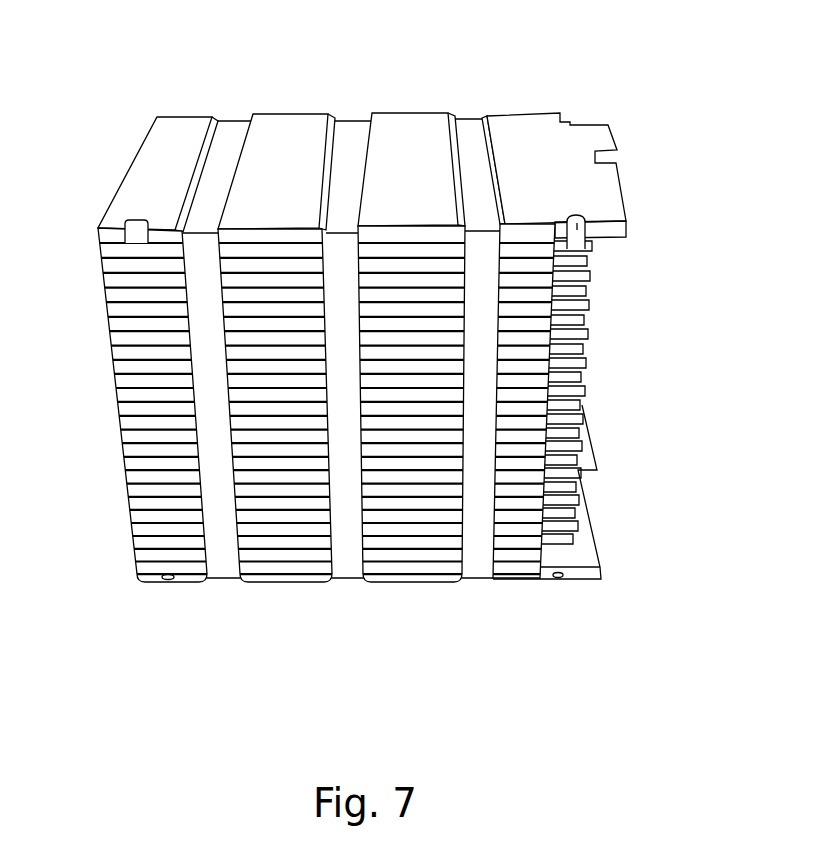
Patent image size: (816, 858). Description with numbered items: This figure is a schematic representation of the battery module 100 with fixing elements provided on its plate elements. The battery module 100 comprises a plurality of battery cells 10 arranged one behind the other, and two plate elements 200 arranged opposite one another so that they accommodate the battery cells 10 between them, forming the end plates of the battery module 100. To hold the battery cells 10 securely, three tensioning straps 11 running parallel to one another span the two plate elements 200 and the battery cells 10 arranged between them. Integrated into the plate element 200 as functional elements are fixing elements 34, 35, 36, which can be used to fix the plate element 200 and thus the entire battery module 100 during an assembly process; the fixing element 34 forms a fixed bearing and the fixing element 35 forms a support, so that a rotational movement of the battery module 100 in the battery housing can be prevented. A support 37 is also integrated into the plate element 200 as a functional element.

The battery module 100 is at (120, 98).
The plate element 200 is at (163, 196).
The battery cell 10 is at (143, 368).
The tensioning strap 11 is at (225, 567).
The support 37 is at (128, 237).
The fixing element 36 is at (578, 215).
The fixing element 35 is at (169, 580).
The fixing element 34 is at (555, 580).